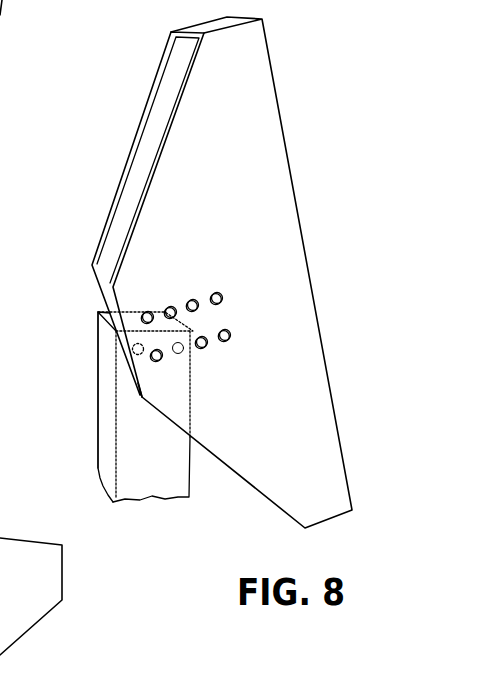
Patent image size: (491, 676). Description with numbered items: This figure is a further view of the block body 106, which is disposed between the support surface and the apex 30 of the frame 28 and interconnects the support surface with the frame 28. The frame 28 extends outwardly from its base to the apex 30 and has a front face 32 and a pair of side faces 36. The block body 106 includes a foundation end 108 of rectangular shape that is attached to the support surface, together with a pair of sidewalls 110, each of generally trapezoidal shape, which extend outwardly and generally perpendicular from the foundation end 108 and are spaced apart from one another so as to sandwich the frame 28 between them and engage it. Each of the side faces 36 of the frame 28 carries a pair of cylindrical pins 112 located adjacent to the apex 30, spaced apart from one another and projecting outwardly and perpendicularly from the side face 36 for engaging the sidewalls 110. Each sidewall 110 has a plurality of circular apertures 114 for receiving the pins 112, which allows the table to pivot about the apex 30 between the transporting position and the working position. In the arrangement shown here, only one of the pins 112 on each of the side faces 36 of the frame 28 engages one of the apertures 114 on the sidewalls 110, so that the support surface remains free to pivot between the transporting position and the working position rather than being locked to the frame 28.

The frame 28 is at (96, 413).
The apex 30 is at (98, 327).
The front face 32 is at (0, 50).
The side faces 36 is at (180, 467).
The block body 106 is at (143, 108).
The foundation end 108 is at (278, 98).
The sidewalls 110 is at (203, 73).
The pins 112 is at (133, 356).
The apertures 114 is at (223, 300).